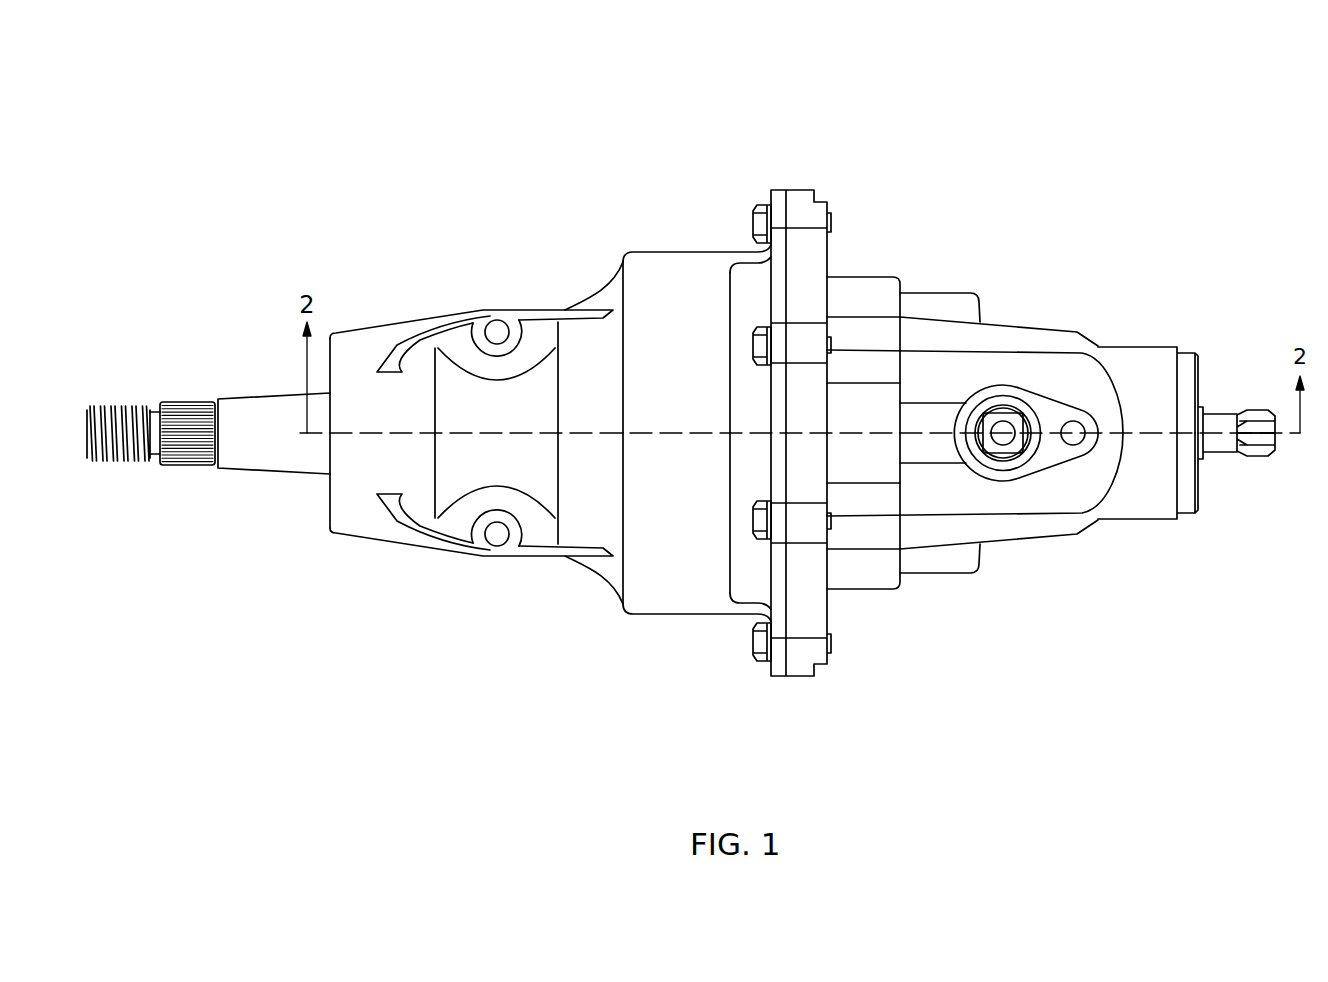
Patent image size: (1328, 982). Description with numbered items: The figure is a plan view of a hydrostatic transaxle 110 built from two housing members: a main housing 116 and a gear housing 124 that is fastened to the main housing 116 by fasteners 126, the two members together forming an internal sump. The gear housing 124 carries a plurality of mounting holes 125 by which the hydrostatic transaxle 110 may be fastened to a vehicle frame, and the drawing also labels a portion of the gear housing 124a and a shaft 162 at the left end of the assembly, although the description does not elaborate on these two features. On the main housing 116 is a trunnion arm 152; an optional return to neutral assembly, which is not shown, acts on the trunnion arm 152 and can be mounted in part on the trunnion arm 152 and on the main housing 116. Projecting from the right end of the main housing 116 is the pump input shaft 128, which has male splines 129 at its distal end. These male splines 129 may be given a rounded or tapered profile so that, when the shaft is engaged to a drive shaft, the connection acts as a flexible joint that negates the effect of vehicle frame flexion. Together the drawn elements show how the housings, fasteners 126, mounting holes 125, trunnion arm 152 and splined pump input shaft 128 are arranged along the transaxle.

The hydrostatic transaxle 110 is at (279, 106).
The input shaft 162 is at (281, 442).
The housing mounting portion 124a is at (357, 520).
The mounting holes 125 is at (497, 334).
The gear housing 124 is at (697, 408).
The fasteners 126 is at (753, 520).
The main housing 116 is at (956, 499).
The trunnion arm 152 is at (1012, 414).
The pump input shaft 128 is at (1222, 421).
The male splines 129 is at (1255, 457).